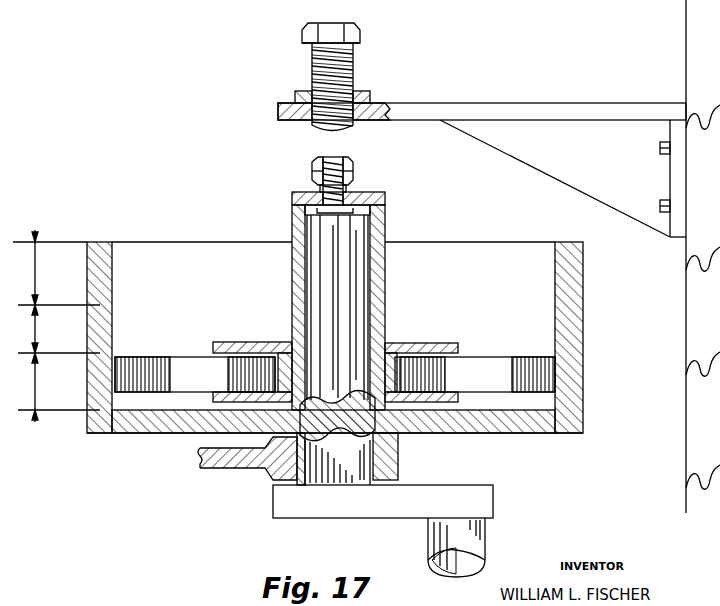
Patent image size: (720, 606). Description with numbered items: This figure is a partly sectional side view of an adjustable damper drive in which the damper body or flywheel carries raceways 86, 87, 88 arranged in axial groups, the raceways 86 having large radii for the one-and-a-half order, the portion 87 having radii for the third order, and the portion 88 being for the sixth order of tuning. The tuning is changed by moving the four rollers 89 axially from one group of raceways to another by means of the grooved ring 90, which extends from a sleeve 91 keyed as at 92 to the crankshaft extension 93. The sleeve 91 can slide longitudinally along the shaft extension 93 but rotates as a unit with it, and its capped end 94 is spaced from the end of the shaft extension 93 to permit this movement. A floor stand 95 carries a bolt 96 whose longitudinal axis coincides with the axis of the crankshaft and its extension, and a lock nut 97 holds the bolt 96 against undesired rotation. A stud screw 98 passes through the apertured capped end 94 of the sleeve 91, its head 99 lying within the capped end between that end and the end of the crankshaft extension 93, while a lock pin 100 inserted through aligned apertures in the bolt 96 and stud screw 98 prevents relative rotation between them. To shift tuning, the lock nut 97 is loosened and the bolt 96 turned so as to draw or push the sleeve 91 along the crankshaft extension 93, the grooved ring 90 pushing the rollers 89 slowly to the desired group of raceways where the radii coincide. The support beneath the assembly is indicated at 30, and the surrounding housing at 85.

The support plate 30 is at (353, 512).
The housing 85 is at (100, 240).
The raceways 86 is at (59, 387).
The raceways 87 is at (59, 329).
The raceways 88 is at (56, 267).
The rollers 89 is at (165, 356).
The grooved ring 90 is at (235, 342).
The sleeve 91 is at (291, 305).
The key 92 is at (340, 258).
The crankshaft extension 93 is at (352, 302).
The capped end 94 is at (307, 193).
The floor stand 95 is at (540, 103).
The bolt 96 is at (312, 80).
The lock nut 97 is at (296, 100).
The stud screw 98 is at (325, 165).
The head 99 is at (305, 210).
The lock pin 100 is at (356, 172).